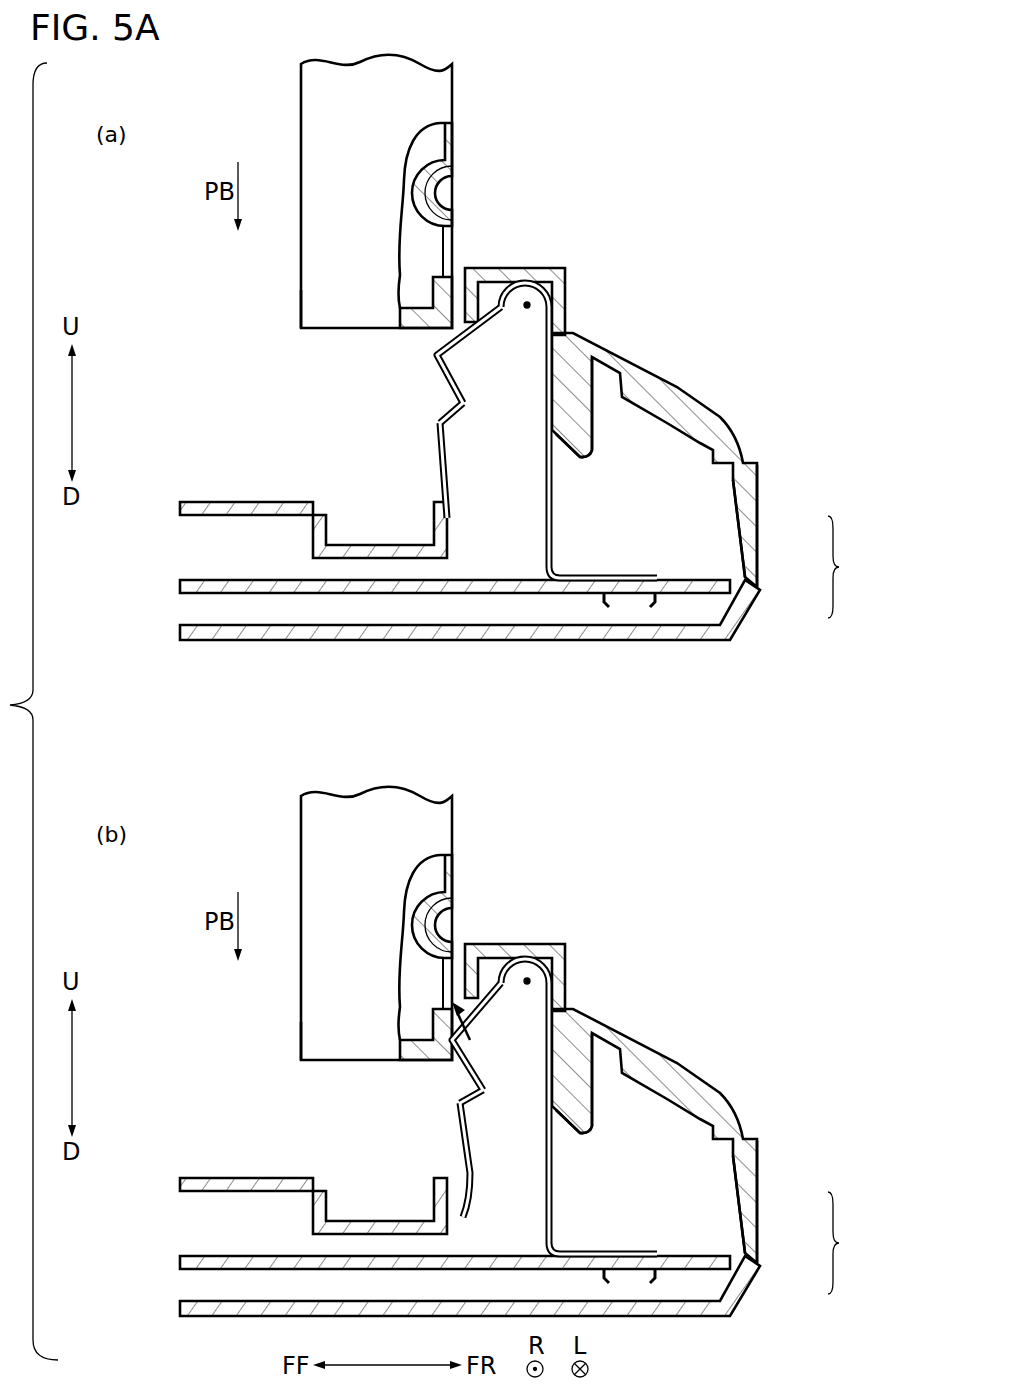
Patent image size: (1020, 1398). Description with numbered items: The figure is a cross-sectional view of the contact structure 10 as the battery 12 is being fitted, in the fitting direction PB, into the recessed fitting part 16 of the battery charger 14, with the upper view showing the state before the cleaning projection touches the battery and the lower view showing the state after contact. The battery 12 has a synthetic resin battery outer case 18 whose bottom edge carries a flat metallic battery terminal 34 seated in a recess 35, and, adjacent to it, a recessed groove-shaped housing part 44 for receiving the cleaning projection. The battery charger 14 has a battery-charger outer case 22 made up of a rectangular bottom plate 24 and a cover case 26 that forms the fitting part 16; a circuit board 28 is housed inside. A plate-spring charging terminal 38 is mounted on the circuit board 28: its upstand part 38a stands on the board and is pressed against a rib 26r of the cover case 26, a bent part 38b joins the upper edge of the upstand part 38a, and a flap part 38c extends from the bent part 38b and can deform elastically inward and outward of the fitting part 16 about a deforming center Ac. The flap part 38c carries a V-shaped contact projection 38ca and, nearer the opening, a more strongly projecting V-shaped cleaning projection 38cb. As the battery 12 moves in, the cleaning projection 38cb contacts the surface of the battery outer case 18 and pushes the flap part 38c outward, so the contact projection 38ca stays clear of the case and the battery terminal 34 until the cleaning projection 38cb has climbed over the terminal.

The contact structure 10 is at (384, 402).
The battery 12 is at (302, 115).
The battery charger 14 is at (680, 390).
The fitting part 16 is at (465, 270).
The battery outer case 18 is at (300, 300).
The battery-charger outer case 22 is at (849, 905).
The bottom plate 24 is at (752, 600).
The cover case 26 is at (759, 512).
The rib 26r is at (584, 434).
The circuit board 28 is at (692, 579).
The battery terminal 34 is at (452, 236).
The recess 35 is at (480, 1030).
The charging terminal 38 is at (492, 736).
The upstand part 38a is at (555, 520).
The bent part 38b is at (525, 270).
The flap part 38c is at (449, 468).
The contact projection 38ca is at (438, 420).
The cleaning projection 38cb is at (432, 358).
The housing part 44 is at (437, 176).
The deforming center Ac is at (533, 306).